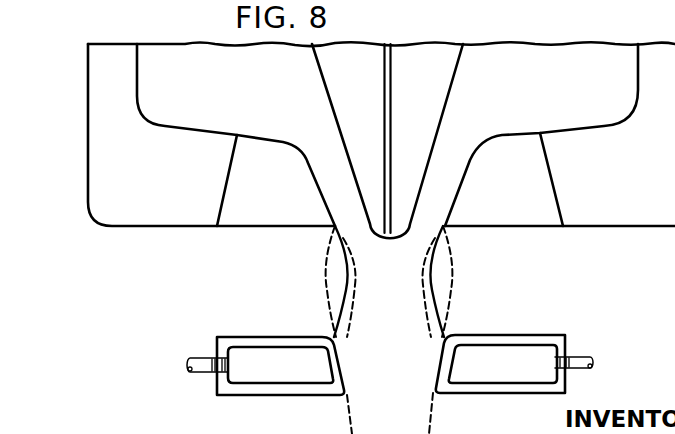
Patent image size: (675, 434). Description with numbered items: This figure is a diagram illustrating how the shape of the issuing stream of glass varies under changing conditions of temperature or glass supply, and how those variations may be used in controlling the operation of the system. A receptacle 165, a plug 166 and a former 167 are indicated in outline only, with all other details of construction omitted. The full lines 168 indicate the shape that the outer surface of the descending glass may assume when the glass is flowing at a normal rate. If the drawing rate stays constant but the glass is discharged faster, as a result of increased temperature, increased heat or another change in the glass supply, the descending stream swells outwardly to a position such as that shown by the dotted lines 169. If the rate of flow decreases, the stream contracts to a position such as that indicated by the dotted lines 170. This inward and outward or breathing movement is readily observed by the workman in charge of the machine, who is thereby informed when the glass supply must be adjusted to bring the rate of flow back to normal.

The receptacle 165 is at (103, 82).
The plug 166 is at (440, 75).
The former 167 is at (510, 327).
The full lines 168 is at (345, 279).
The dotted lines 169 is at (447, 277).
The dotted lines 170 is at (425, 306).